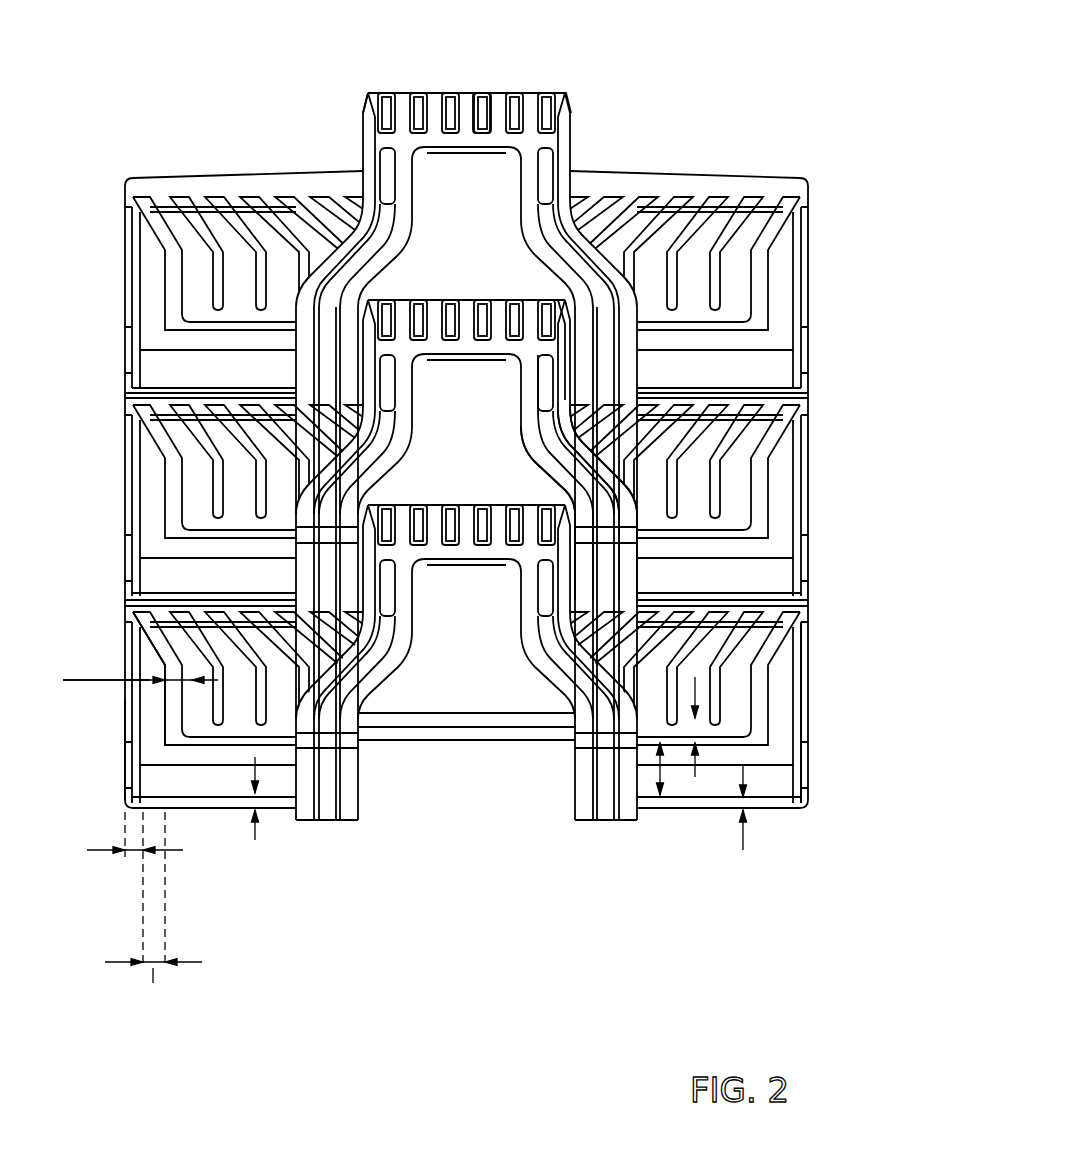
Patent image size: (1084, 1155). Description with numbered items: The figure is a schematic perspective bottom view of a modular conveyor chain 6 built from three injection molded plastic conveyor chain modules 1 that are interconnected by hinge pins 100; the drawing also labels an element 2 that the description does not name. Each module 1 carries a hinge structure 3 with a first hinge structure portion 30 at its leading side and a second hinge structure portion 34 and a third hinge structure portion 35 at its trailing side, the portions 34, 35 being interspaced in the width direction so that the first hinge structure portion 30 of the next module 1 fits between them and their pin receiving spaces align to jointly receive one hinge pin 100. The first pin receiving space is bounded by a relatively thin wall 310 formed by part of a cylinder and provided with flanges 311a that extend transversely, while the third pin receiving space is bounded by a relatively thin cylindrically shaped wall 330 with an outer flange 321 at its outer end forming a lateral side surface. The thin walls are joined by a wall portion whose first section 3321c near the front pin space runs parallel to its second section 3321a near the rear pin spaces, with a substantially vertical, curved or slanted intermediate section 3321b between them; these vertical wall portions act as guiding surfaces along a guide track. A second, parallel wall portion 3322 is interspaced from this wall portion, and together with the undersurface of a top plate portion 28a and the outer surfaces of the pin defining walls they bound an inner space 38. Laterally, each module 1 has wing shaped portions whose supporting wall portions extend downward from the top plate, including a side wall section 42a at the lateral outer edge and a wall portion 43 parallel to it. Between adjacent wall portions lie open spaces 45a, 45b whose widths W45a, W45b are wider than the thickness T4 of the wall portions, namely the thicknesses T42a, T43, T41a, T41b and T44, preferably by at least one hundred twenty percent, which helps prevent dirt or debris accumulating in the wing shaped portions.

The conveyor chain module 1 is at (816, 270).
The module 2 is at (220, 170).
The hinge structure 3 is at (388, 177).
The modular conveyor chain 6 is at (267, 97).
The first hinge structure portion 30 is at (583, 108).
The relatively thin wall 310 is at (482, 108).
The flange 311a is at (547, 382).
The first section of wall portion 3321c is at (565, 348).
The intermediate section of wall portion 3321b is at (597, 460).
The top plate portion 28a is at (603, 500).
The relatively thin cylindrically shaped wall 330 is at (603, 550).
The second section of wall portion 3321a is at (628, 573).
The outer flange 321 is at (760, 571).
The second wall portion 3322 is at (538, 453).
The inner space 38 is at (577, 463).
The hinge pin 100 is at (467, 372).
The second hinge structure portion 34 is at (363, 790).
The third hinge structure portion 35 is at (570, 790).
The wall portion 43 is at (177, 708).
The side wall section 42a is at (133, 770).
The open space 45a is at (778, 714).
The open space 45b is at (760, 772).
The thickness of wall portion T43 is at (112, 680).
The thickness of supporting wall portions T4 is at (102, 663).
The thickness of wall portion T44 is at (695, 677).
The thickness of wall portion T41a is at (255, 840).
The thickness of wall portion T41b is at (743, 850).
The thickness of side wall section T42a is at (133, 853).
The width of interspace W45a is at (153, 987).
The width of interspace W45b is at (662, 768).